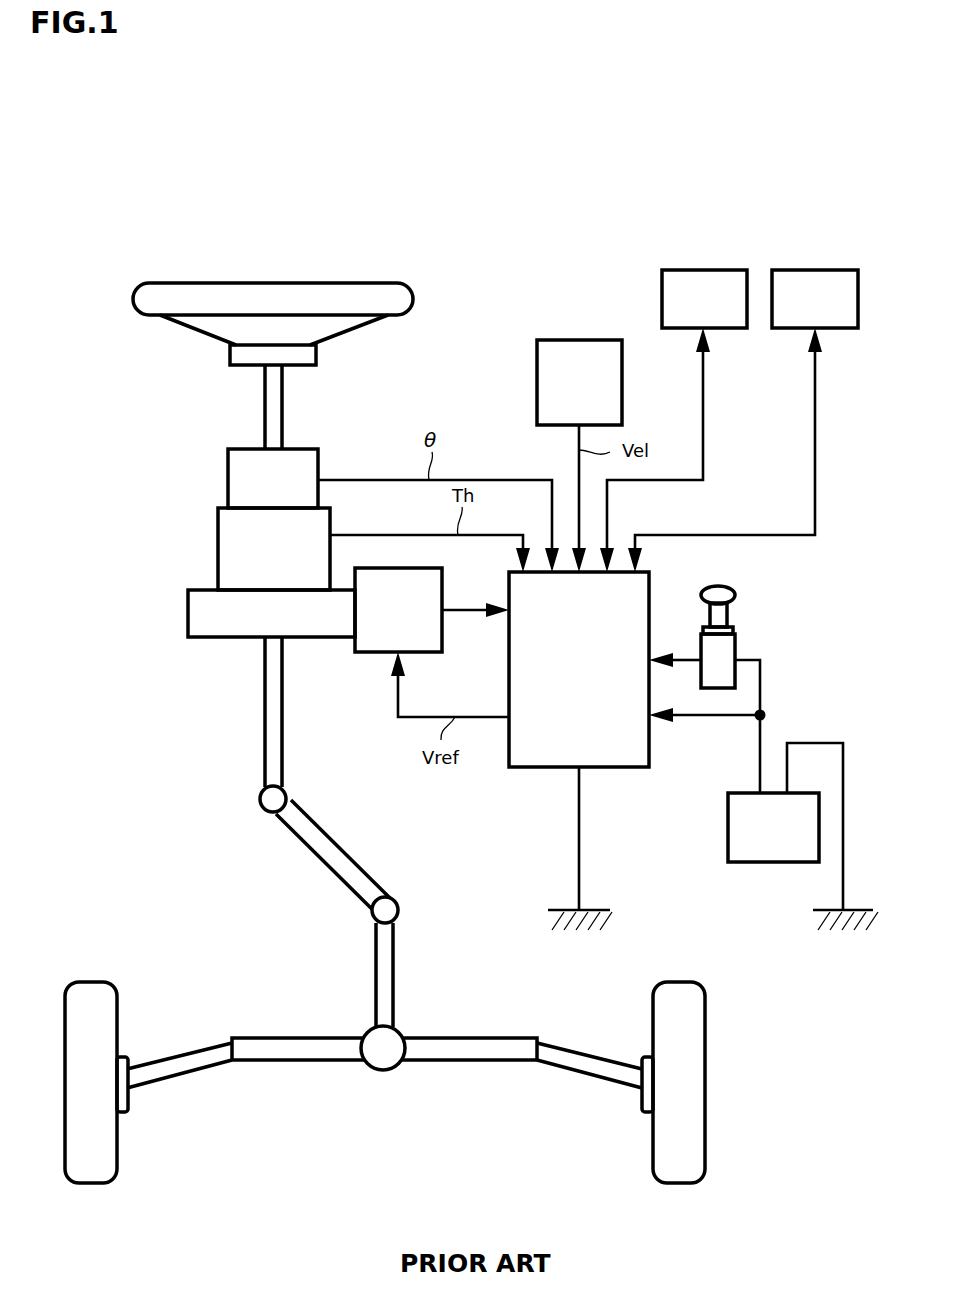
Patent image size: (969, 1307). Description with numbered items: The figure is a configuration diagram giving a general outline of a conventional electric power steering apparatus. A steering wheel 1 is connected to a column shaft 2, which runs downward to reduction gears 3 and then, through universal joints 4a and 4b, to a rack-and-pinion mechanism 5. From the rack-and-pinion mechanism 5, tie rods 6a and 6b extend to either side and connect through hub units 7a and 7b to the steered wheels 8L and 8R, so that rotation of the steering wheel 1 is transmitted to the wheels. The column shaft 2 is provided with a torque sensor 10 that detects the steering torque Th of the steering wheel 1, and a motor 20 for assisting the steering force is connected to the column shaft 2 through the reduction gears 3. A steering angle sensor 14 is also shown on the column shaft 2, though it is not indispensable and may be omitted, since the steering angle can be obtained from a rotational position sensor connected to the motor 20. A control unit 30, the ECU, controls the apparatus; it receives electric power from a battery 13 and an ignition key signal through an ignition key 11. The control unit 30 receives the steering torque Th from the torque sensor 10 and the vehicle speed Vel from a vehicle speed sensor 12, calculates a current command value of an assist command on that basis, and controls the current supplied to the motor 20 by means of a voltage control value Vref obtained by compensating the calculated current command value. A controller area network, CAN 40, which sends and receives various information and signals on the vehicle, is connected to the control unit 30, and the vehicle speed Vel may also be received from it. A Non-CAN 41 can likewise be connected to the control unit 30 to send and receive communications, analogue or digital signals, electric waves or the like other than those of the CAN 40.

The steering wheel 1 is at (413, 300).
The column shaft 2 is at (265, 412).
The reduction gears 3 is at (188, 615).
The universal joint 4a is at (260, 812).
The universal joint 4b is at (372, 920).
The rack-and-pinion mechanism 5 is at (402, 1032).
The tie rod 6a is at (168, 1055).
The tie rod 6b is at (585, 1055).
The hub unit 7a is at (128, 1105).
The hub unit 7b is at (641, 1105).
The steered wheel 8L is at (115, 1170).
The steered wheel 8R is at (655, 1170).
The torque sensor 10 is at (218, 537).
The ignition key 11 is at (735, 597).
The vehicle speed sensor 12 is at (622, 355).
The battery 13 is at (728, 818).
The steering angle sensor 14 is at (228, 473).
The motor 20 is at (442, 577).
The control unit 30 is at (649, 577).
The CAN 40 is at (842, 270).
The Non-CAN 41 is at (731, 270).